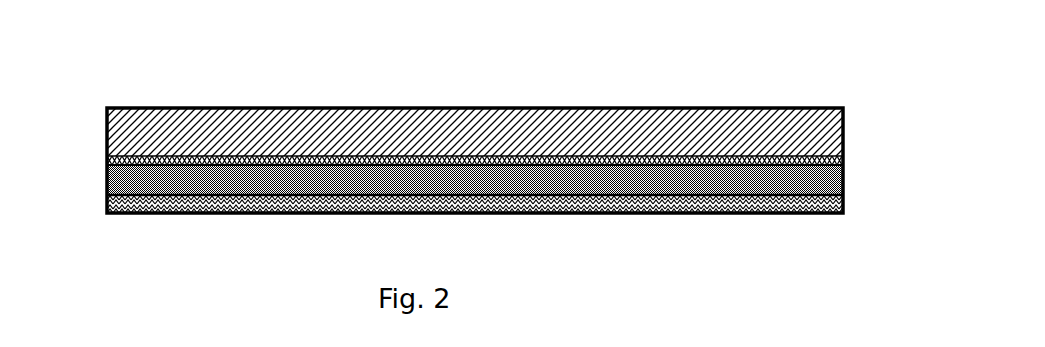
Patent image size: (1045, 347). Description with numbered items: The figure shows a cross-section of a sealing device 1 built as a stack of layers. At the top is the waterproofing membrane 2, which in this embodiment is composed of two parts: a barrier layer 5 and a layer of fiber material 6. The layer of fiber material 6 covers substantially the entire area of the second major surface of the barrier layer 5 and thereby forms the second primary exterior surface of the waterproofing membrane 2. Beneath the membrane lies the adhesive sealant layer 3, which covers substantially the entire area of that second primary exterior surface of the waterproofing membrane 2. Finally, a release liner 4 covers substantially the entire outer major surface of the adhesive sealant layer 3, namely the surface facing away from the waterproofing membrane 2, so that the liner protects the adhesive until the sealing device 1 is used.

The sealing device 1 is at (499, 133).
The waterproofing membrane 2 is at (499, 123).
The adhesive sealant layer 3 is at (843, 178).
The release liner 4 is at (843, 203).
The barrier layer 5 is at (843, 130).
The layer of fiber material 6 is at (843, 162).